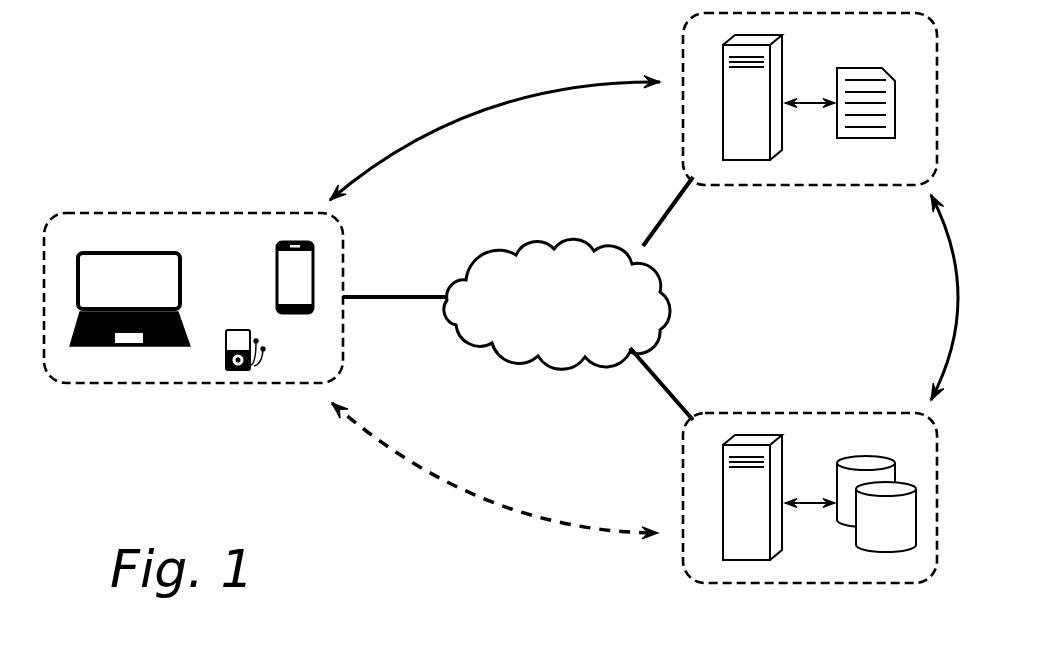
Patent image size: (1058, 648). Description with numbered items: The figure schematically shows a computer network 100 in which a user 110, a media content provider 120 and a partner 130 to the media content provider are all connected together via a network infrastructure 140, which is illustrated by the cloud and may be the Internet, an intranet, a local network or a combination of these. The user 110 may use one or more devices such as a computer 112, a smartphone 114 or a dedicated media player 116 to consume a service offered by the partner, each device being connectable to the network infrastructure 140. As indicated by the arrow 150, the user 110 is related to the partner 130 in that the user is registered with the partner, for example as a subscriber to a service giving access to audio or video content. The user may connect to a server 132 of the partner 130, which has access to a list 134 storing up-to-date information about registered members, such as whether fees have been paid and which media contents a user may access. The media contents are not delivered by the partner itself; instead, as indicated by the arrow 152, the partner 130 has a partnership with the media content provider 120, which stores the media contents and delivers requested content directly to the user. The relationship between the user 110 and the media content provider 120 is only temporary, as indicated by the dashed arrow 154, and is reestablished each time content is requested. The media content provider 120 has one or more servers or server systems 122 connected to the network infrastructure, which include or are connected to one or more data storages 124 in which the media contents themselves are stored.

The computer network 100 is at (157, 68).
The user 110 is at (127, 212).
The computer 112 is at (125, 345).
The smartphone 114 is at (280, 242).
The dedicated media player 116 is at (238, 372).
The media content provider 120 is at (683, 497).
The servers or server systems 122 is at (747, 560).
The data storages 124 is at (877, 550).
The partner 130 is at (683, 65).
The server 132 is at (745, 160).
The list 134 is at (862, 138).
The network infrastructure 140 is at (540, 363).
The arrow 150 is at (478, 108).
The arrow 152 is at (956, 297).
The dashed arrow 154 is at (490, 500).